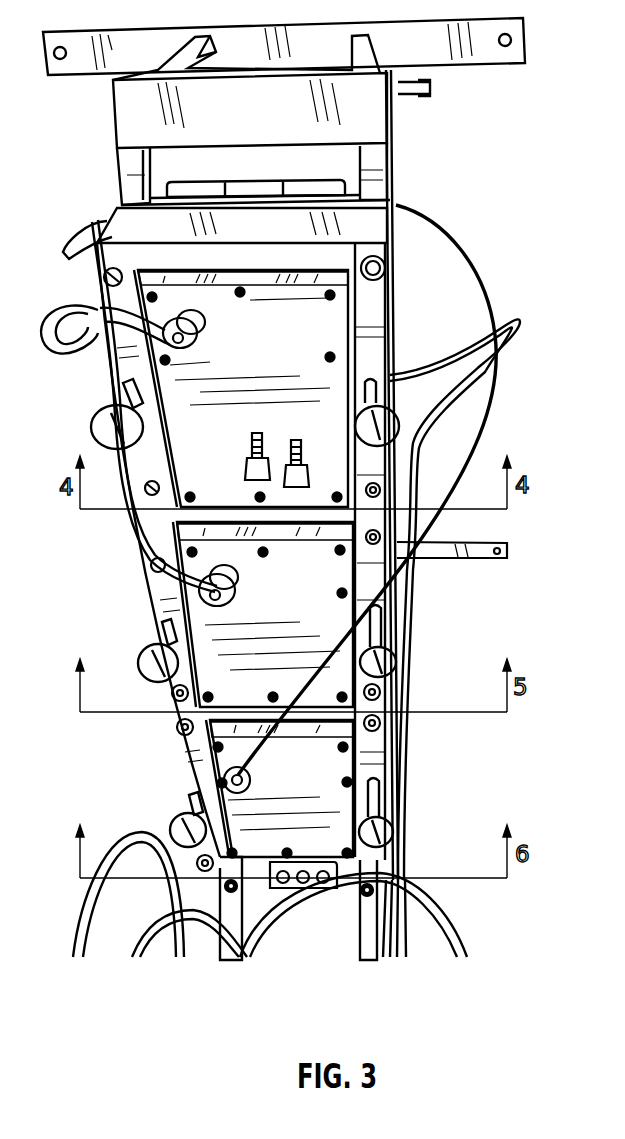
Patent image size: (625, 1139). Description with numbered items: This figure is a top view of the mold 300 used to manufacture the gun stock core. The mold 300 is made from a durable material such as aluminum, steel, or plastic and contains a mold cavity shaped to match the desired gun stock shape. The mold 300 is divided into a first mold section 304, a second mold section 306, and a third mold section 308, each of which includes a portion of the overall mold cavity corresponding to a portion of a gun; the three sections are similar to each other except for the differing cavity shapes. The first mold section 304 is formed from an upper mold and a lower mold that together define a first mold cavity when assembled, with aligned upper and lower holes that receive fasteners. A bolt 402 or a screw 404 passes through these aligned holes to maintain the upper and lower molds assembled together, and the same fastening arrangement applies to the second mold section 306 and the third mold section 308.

The mold 300 is at (391, 331).
The first mold section 304 is at (382, 297).
The second mold section 306 is at (383, 590).
The third mold section 308 is at (373, 757).
The bolt 402 is at (393, 415).
The screw 404 is at (303, 447).